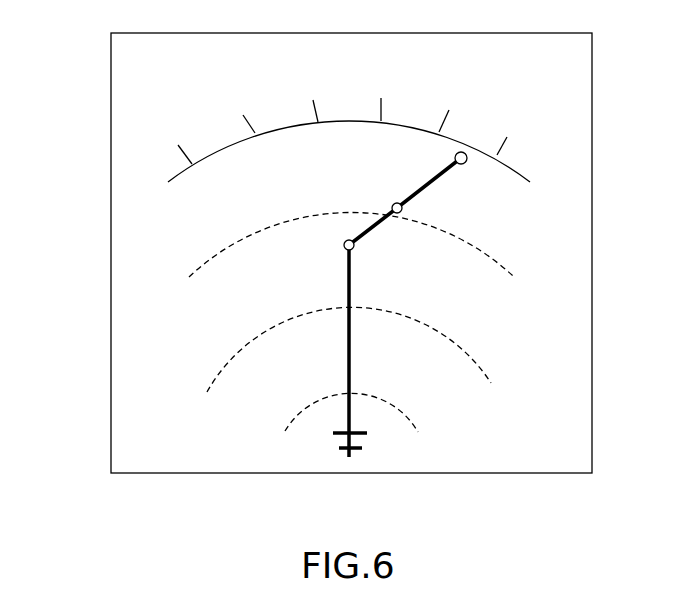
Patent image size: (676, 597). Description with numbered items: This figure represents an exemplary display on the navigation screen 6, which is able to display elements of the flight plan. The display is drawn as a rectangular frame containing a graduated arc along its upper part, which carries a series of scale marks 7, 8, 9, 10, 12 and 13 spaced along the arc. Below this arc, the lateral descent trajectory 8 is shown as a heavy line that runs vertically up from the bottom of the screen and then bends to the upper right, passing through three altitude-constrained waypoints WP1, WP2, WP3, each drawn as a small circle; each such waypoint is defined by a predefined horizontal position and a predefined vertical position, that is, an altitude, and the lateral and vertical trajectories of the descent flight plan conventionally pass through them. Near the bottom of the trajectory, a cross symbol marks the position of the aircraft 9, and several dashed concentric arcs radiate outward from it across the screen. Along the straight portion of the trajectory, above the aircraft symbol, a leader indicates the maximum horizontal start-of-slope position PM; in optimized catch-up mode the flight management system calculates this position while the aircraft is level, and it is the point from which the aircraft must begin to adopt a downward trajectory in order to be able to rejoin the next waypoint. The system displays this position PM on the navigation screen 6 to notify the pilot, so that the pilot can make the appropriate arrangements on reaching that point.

The navigation screen 6 is at (111, 103).
The scale mark 7 is at (180, 143).
The lateral descent trajectory 8 is at (437, 492).
The position of the aircraft 9 is at (390, 505).
The scale mark 10 is at (386, 97).
The scale mark 12 is at (454, 111).
The scale mark 13 is at (515, 135).
The waypoint WP1 is at (355, 247).
The waypoint WP2 is at (402, 210).
The waypoint WP3 is at (467, 161).
The maximum horizontal start-of-slope position PM is at (349, 347).